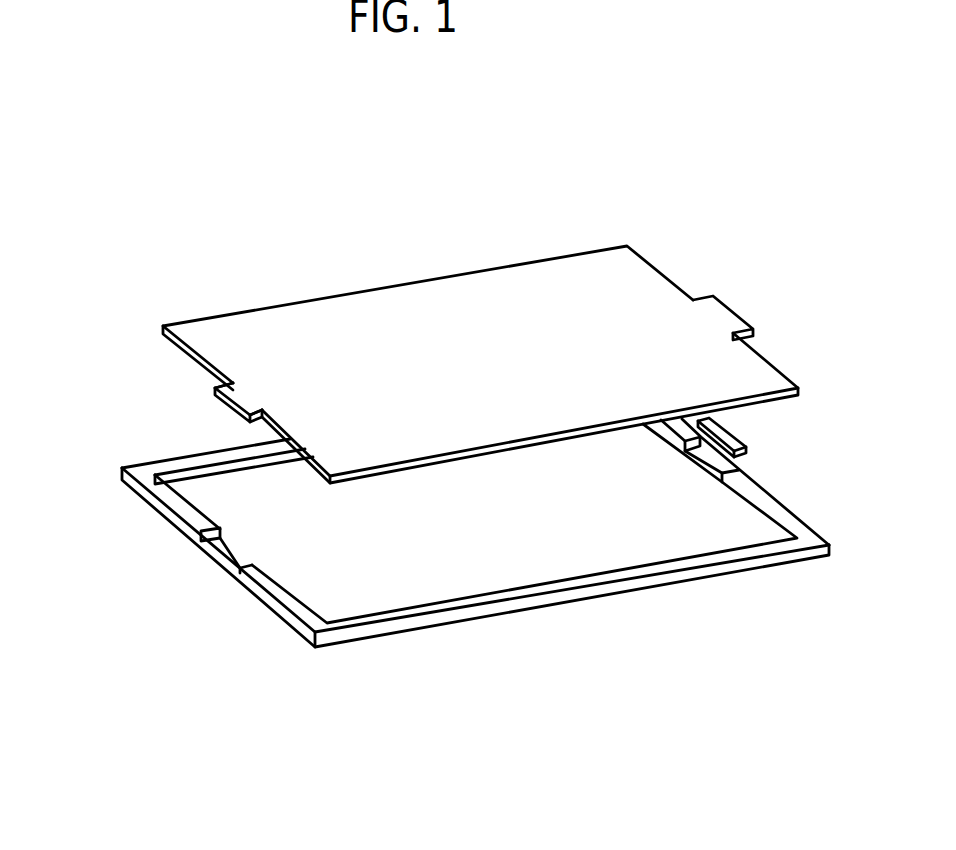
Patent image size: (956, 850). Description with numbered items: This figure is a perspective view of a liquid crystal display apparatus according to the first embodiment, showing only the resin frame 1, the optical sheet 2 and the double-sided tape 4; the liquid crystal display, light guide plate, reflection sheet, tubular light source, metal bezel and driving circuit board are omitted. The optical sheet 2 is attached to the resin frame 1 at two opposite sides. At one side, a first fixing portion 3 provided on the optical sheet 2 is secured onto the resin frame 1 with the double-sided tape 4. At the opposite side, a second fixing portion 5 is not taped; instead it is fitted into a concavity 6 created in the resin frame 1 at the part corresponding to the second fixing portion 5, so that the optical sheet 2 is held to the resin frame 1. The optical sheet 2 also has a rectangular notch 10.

The resin frame 1 is at (452, 527).
The optical sheet 2 is at (460, 327).
The first fixing portion 3 is at (733, 308).
The double-sided tape 4 is at (739, 441).
The second fixing portion 5 is at (223, 393).
The concavity 6 is at (228, 548).
The rectangular notch 10 is at (259, 409).